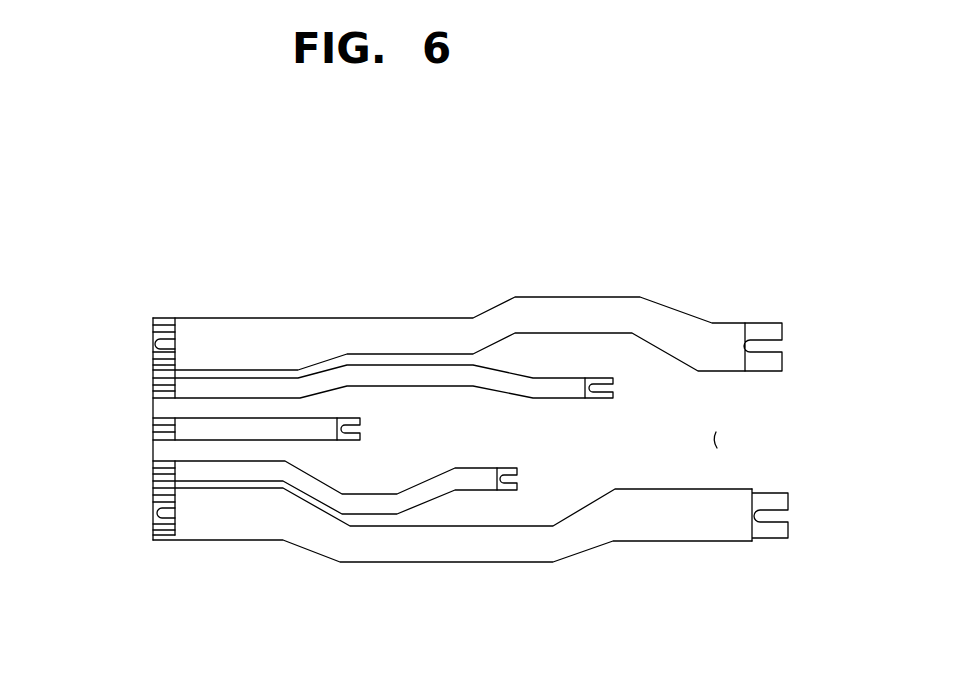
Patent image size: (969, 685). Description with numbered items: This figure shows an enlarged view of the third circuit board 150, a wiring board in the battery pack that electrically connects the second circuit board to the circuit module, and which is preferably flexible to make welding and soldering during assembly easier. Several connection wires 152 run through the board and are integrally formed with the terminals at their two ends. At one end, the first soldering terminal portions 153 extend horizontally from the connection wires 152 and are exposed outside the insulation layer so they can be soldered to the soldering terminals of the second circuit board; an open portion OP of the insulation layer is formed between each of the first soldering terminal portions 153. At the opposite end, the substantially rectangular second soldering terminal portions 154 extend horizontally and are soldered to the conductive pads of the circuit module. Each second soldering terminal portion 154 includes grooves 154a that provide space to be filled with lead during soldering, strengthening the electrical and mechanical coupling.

The third circuit board 150 is at (166, 184).
The connection wires 152 is at (241, 428).
The first soldering terminal portions 153 is at (602, 380).
The second soldering terminal portions 154 is at (152, 355).
The grooves 154a is at (152, 343).
The open portion OP is at (718, 440).